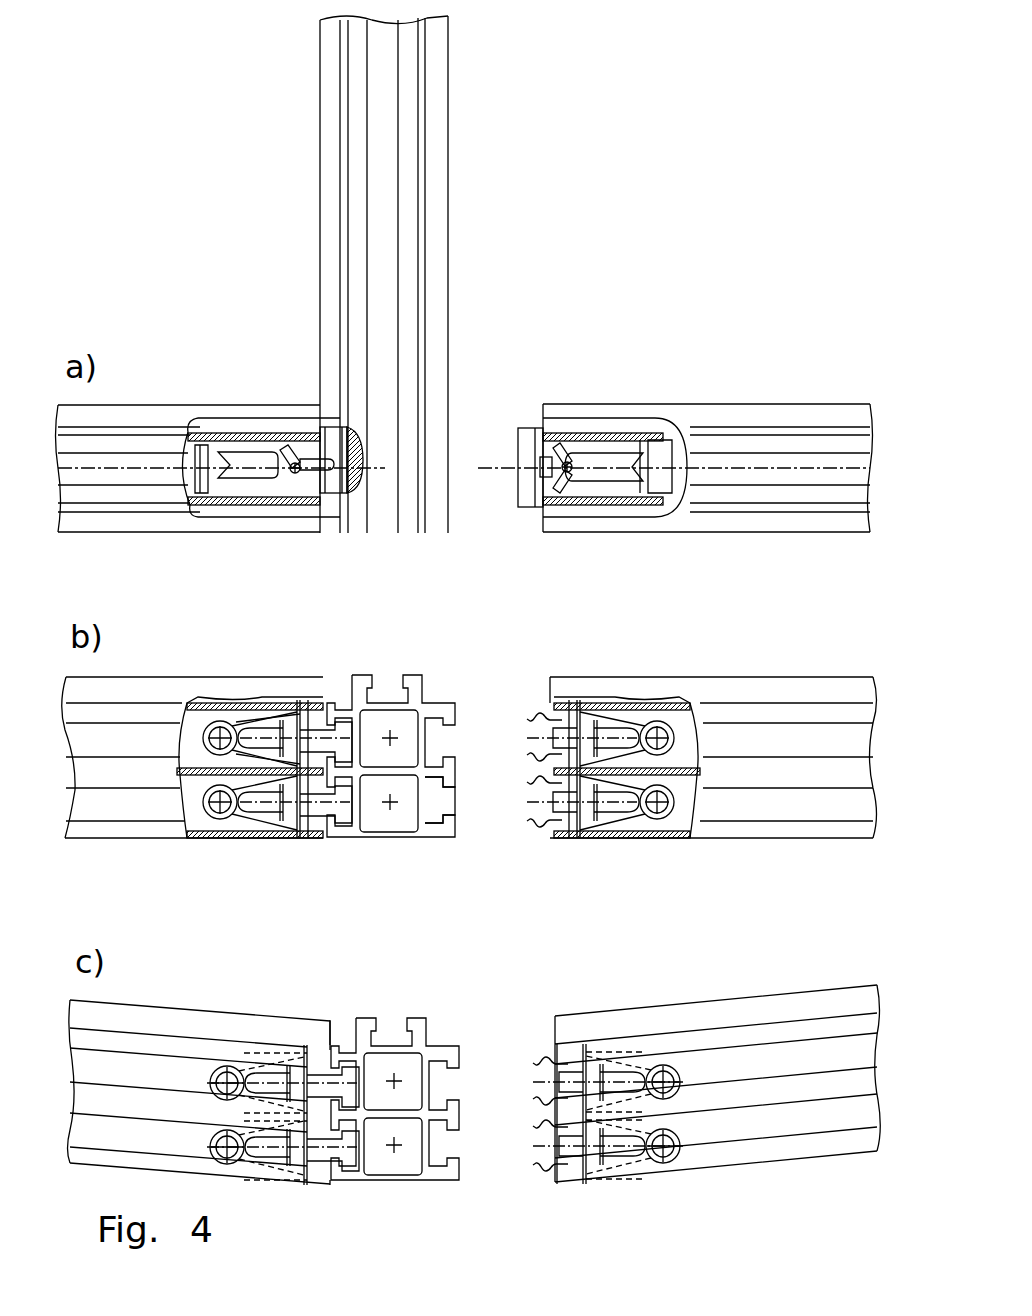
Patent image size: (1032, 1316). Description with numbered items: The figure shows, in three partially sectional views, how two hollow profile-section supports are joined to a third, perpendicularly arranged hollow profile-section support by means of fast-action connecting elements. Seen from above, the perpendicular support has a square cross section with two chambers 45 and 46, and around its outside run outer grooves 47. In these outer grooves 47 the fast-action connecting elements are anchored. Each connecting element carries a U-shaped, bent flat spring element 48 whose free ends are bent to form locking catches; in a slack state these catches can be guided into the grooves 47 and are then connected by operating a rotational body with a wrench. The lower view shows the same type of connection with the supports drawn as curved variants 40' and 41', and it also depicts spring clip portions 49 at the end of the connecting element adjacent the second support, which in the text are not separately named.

The chamber 45 is at (400, 826).
The chamber 46 is at (413, 737).
The outer groove 47 is at (440, 801).
The U-shaped bent flat spring element 48 is at (240, 715).
The spring clip 49 is at (535, 710).
The first curved profile rail 40' is at (199, 1057).
The second curved profile rail 41' is at (717, 1054).